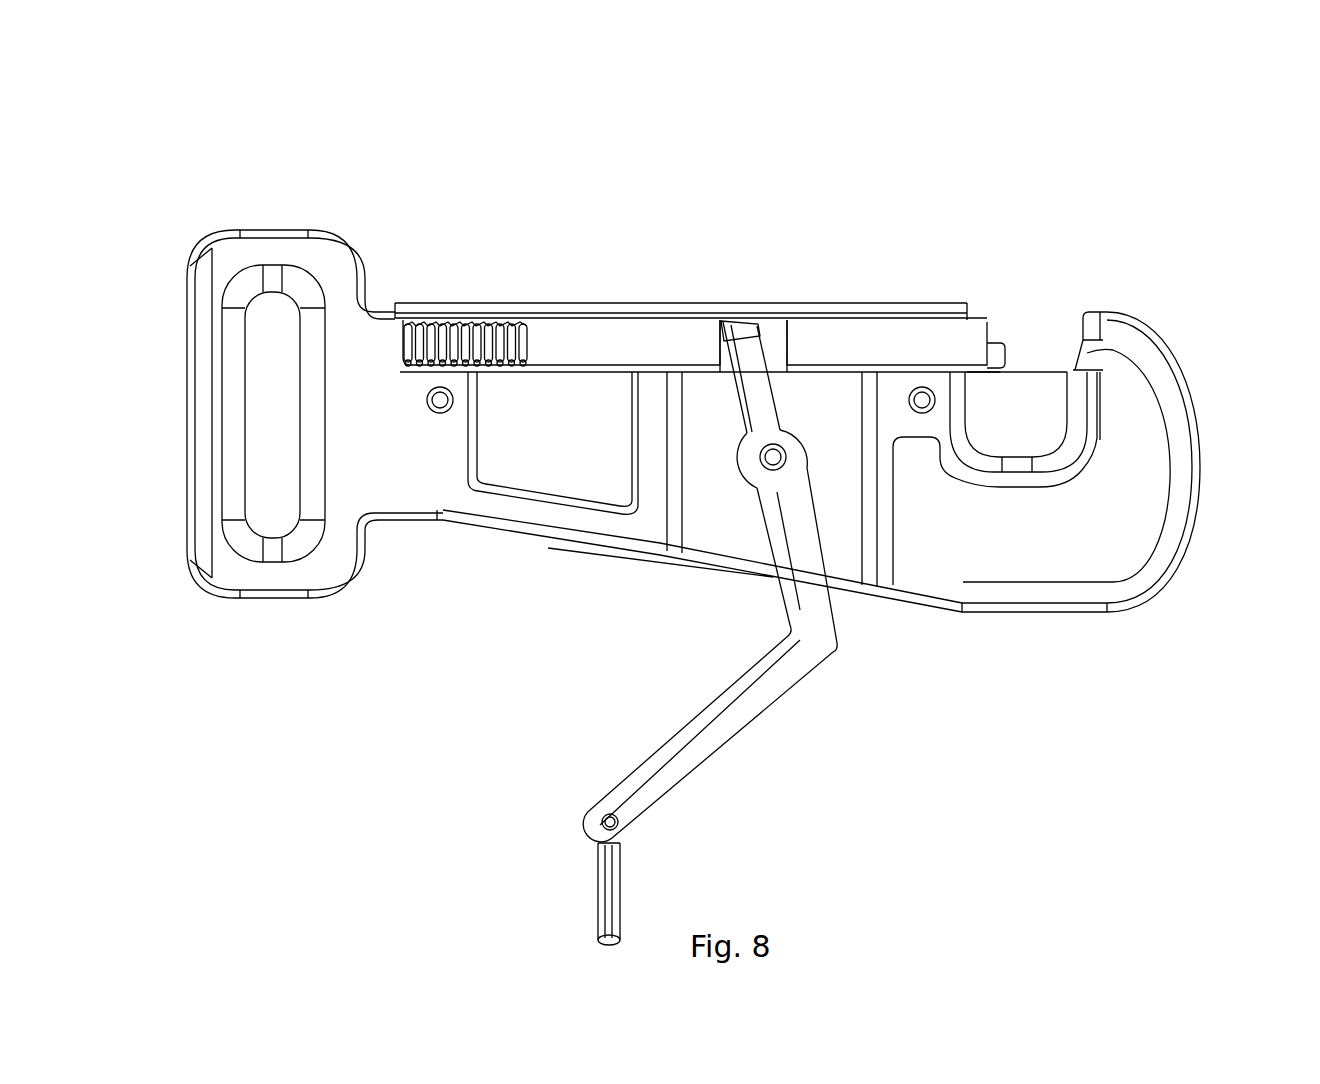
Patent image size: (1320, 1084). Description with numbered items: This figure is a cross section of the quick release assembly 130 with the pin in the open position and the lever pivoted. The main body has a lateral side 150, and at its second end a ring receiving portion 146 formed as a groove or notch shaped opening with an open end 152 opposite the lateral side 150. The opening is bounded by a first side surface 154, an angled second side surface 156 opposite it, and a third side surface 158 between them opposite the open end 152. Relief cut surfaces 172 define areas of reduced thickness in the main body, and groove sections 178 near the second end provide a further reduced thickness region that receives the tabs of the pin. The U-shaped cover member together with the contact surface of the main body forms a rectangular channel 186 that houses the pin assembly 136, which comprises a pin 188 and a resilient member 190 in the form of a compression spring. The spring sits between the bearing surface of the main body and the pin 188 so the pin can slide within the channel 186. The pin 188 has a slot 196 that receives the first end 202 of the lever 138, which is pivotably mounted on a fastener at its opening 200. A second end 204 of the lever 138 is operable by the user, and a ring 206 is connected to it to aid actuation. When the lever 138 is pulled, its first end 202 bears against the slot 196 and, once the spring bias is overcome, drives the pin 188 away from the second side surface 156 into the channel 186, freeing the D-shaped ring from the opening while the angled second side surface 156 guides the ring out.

The quick release assembly 130 is at (235, 65).
The pin assembly 136 is at (518, 320).
The lever 138 is at (822, 648).
The ring receiving portion 146 is at (1040, 487).
The lateral side 150 is at (960, 612).
The open end 152 is at (1042, 296).
The first side surface 154 is at (967, 395).
The second side surface 156 is at (1052, 382).
The third side surface 158 is at (1012, 457).
The relief cut surface 172 is at (540, 462).
The groove section 178 is at (1087, 355).
The rectangular channel 186 is at (827, 318).
The pin 188 is at (642, 342).
The resilient member 190 is at (410, 318).
The slot 196 is at (775, 328).
The opening of the lever 200 is at (777, 520).
The first end of the lever 202 is at (752, 343).
The second end of the lever 204 is at (598, 798).
The ring 206 is at (597, 880).